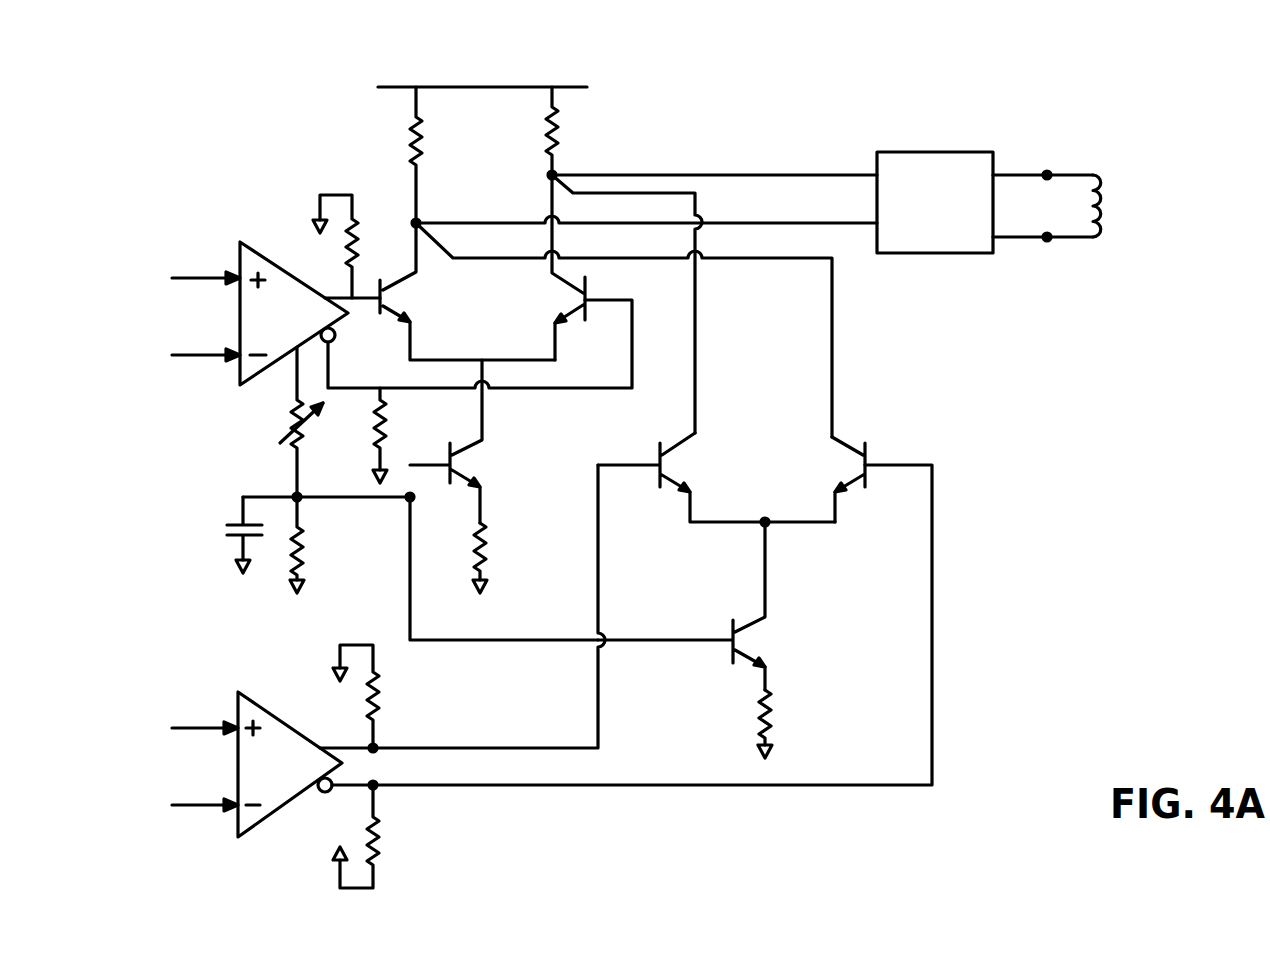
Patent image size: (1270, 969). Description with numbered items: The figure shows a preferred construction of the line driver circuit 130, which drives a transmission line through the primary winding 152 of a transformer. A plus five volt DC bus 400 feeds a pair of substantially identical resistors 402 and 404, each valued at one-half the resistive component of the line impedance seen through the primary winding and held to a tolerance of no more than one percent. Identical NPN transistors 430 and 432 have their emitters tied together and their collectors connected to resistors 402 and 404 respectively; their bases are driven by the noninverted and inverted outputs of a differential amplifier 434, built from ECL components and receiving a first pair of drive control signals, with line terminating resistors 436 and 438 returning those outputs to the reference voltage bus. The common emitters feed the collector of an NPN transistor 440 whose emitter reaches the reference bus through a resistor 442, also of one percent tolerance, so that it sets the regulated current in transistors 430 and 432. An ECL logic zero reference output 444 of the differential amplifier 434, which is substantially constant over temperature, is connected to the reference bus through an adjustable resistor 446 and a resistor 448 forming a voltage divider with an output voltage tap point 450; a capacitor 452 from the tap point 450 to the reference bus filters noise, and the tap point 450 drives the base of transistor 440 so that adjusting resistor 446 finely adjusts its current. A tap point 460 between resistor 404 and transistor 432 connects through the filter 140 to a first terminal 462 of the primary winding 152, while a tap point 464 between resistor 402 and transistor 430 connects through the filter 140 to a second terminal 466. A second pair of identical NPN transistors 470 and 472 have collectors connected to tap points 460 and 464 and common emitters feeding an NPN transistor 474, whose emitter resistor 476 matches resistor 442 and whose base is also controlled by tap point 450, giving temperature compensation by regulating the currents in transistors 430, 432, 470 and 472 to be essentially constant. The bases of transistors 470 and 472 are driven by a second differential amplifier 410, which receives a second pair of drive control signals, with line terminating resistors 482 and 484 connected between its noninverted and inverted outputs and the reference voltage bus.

The line driver circuit 130 is at (925, 358).
The filter 140 is at (885, 150).
The primary winding 152 is at (1107, 228).
The +5 volt DC bus 400 is at (553, 86).
The resistor 402 is at (410, 152).
The resistor 404 is at (562, 138).
The operational amplifier 410 is at (282, 722).
The NPN transistor 430 is at (380, 318).
The NPN transistor 432 is at (587, 316).
The differential amplifier 434 is at (280, 266).
The line terminating resistor 436 is at (360, 240).
The line terminating resistor 438 is at (386, 430).
The NPN transistor 440 is at (445, 480).
The resistor 442 is at (490, 548).
The ECL logic zero reference output 444 is at (290, 383).
The adjustable resistor 446 is at (305, 447).
The resistor 448 is at (305, 575).
The output voltage tap point 450 is at (293, 492).
The capacitor 452 is at (230, 527).
The tap point 460 is at (548, 176).
The first terminal 462 is at (1047, 170).
The tap point 464 is at (420, 220).
The second terminal 466 is at (1047, 240).
The NPN transistor 470 is at (656, 484).
The NPN transistor 472 is at (872, 484).
The NPN transistor 474 is at (730, 632).
The resistor 476 is at (775, 718).
The line terminating resistor 482 is at (380, 695).
The line terminating resistor 484 is at (380, 850).